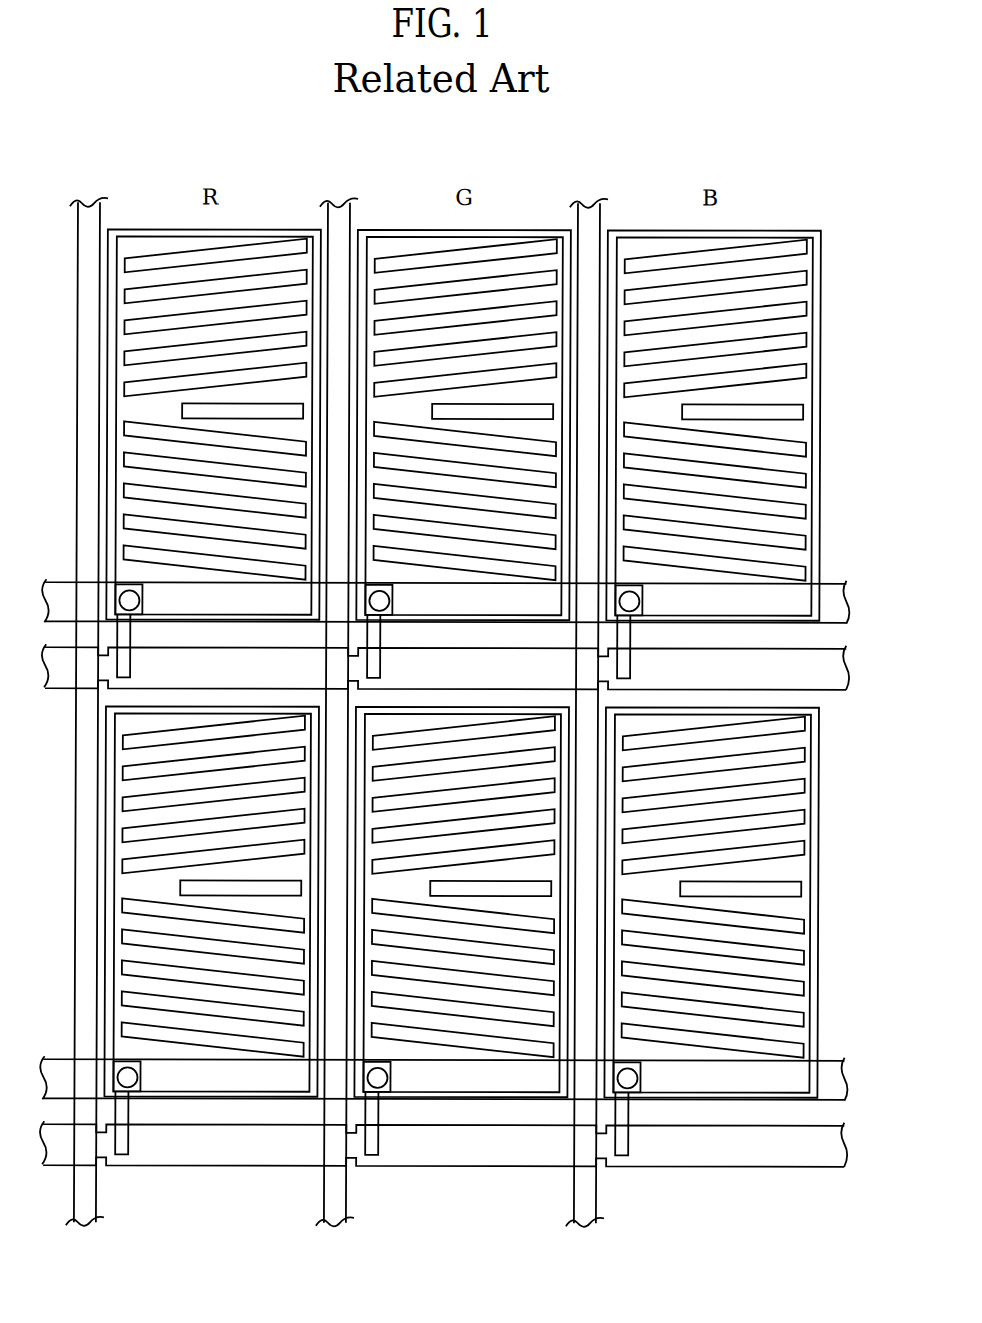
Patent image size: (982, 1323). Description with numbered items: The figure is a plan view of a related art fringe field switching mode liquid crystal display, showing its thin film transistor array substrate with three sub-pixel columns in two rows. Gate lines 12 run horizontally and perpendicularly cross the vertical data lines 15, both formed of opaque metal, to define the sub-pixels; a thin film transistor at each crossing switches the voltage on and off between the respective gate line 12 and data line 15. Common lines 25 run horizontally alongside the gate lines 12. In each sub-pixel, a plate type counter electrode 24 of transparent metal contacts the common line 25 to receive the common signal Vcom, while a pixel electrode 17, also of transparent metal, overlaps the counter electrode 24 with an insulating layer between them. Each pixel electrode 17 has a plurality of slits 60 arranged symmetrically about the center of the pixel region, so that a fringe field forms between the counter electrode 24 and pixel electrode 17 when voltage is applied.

The gate line 12 is at (850, 671).
The data line 15 is at (589, 222).
The pixel electrode 17 is at (806, 410).
The counter electrode 24 is at (822, 438).
The common line 25 is at (850, 601).
The slits 60 is at (809, 338).